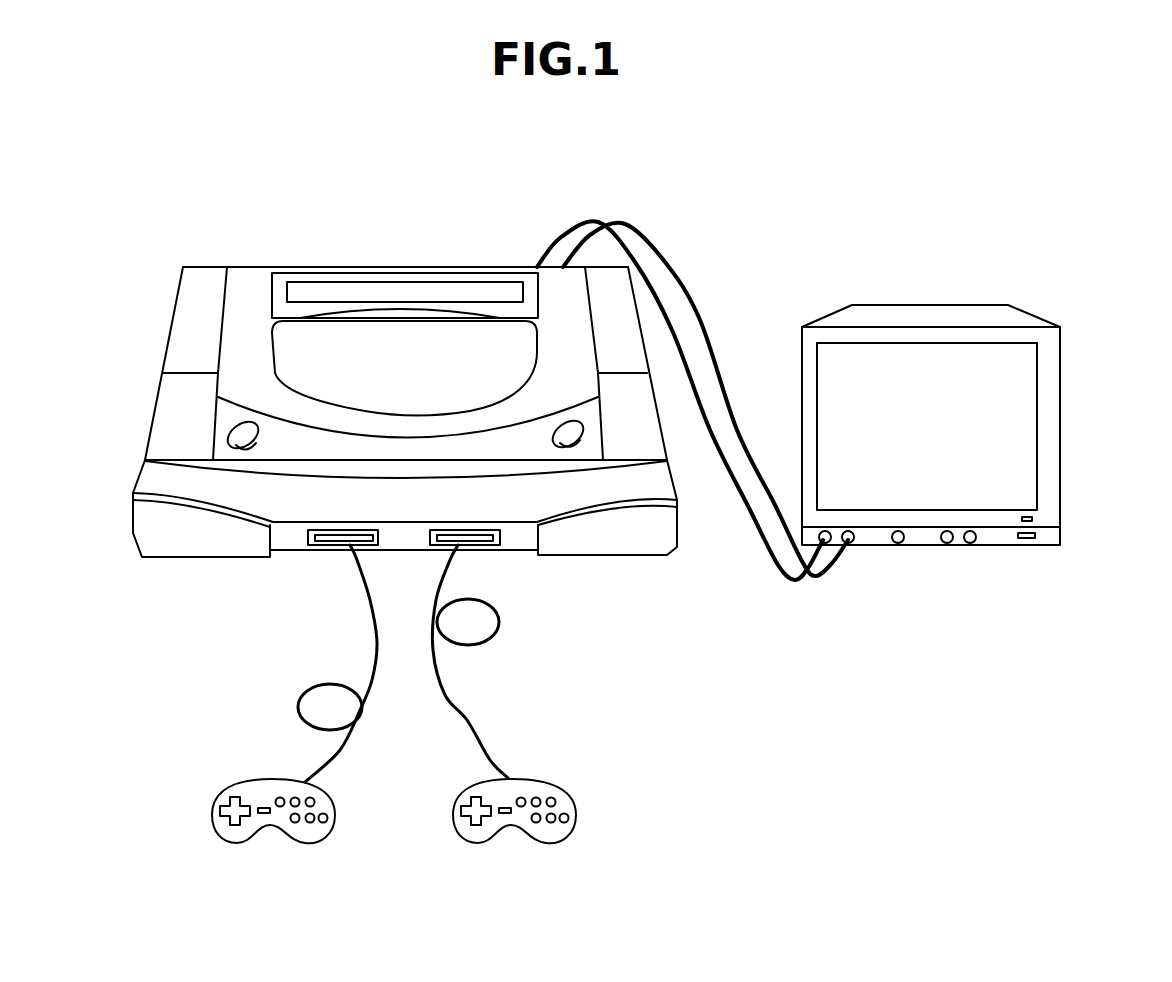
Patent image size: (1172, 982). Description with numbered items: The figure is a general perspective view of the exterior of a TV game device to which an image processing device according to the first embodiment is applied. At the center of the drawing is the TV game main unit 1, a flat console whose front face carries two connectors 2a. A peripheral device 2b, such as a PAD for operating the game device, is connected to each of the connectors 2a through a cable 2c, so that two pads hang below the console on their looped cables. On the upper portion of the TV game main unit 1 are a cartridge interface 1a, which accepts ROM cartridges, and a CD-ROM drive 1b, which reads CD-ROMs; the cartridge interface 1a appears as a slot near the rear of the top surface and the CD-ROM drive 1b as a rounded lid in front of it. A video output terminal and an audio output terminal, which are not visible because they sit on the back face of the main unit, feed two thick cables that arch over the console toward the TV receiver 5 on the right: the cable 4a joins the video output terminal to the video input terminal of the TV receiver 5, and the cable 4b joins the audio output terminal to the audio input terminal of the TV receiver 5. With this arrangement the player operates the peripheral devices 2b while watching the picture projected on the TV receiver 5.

The TV game main unit 1 is at (410, 268).
The cartridge interface 1a is at (316, 283).
The CD-ROM drive 1b is at (490, 333).
The connector 2a is at (317, 545).
The peripheral device 2b is at (222, 843).
The cable 2c is at (298, 707).
The cable 4a is at (698, 320).
The cable 4b is at (738, 496).
The TV receiver 5 is at (1062, 443).